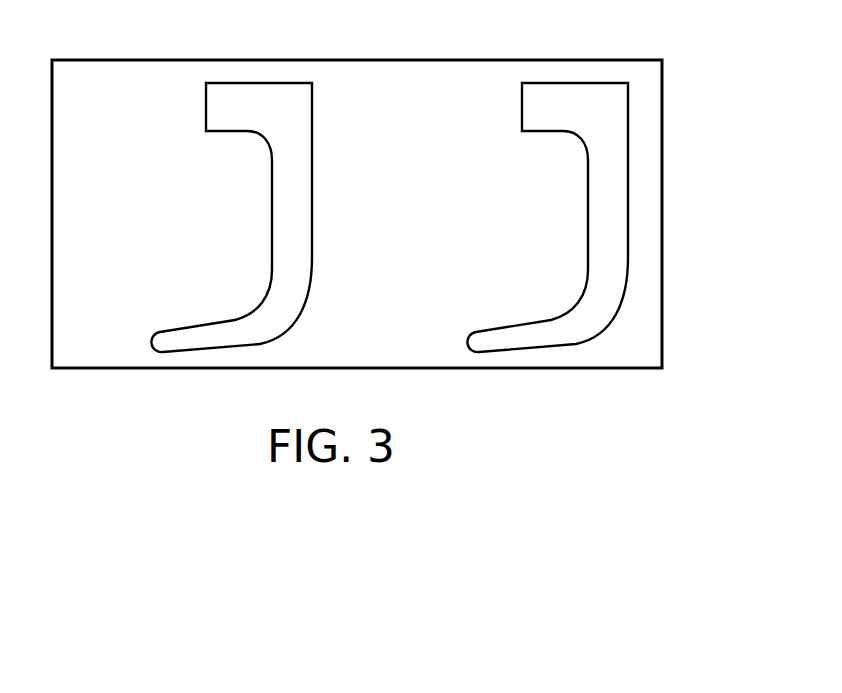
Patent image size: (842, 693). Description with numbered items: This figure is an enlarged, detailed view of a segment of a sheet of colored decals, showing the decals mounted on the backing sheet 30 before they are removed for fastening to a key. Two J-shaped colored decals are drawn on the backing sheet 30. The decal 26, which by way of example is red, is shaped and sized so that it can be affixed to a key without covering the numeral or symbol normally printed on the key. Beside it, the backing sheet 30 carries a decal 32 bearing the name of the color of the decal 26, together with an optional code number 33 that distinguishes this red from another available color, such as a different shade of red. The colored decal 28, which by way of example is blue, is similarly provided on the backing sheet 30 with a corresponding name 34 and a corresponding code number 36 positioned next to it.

The decal 26 is at (293, 121).
The colored decal 28 is at (603, 148).
The backing sheet 30 is at (477, 60).
The decal 32 is at (122, 188).
The code number 33 is at (115, 288).
The name 34 is at (467, 202).
The code number 36 is at (455, 277).